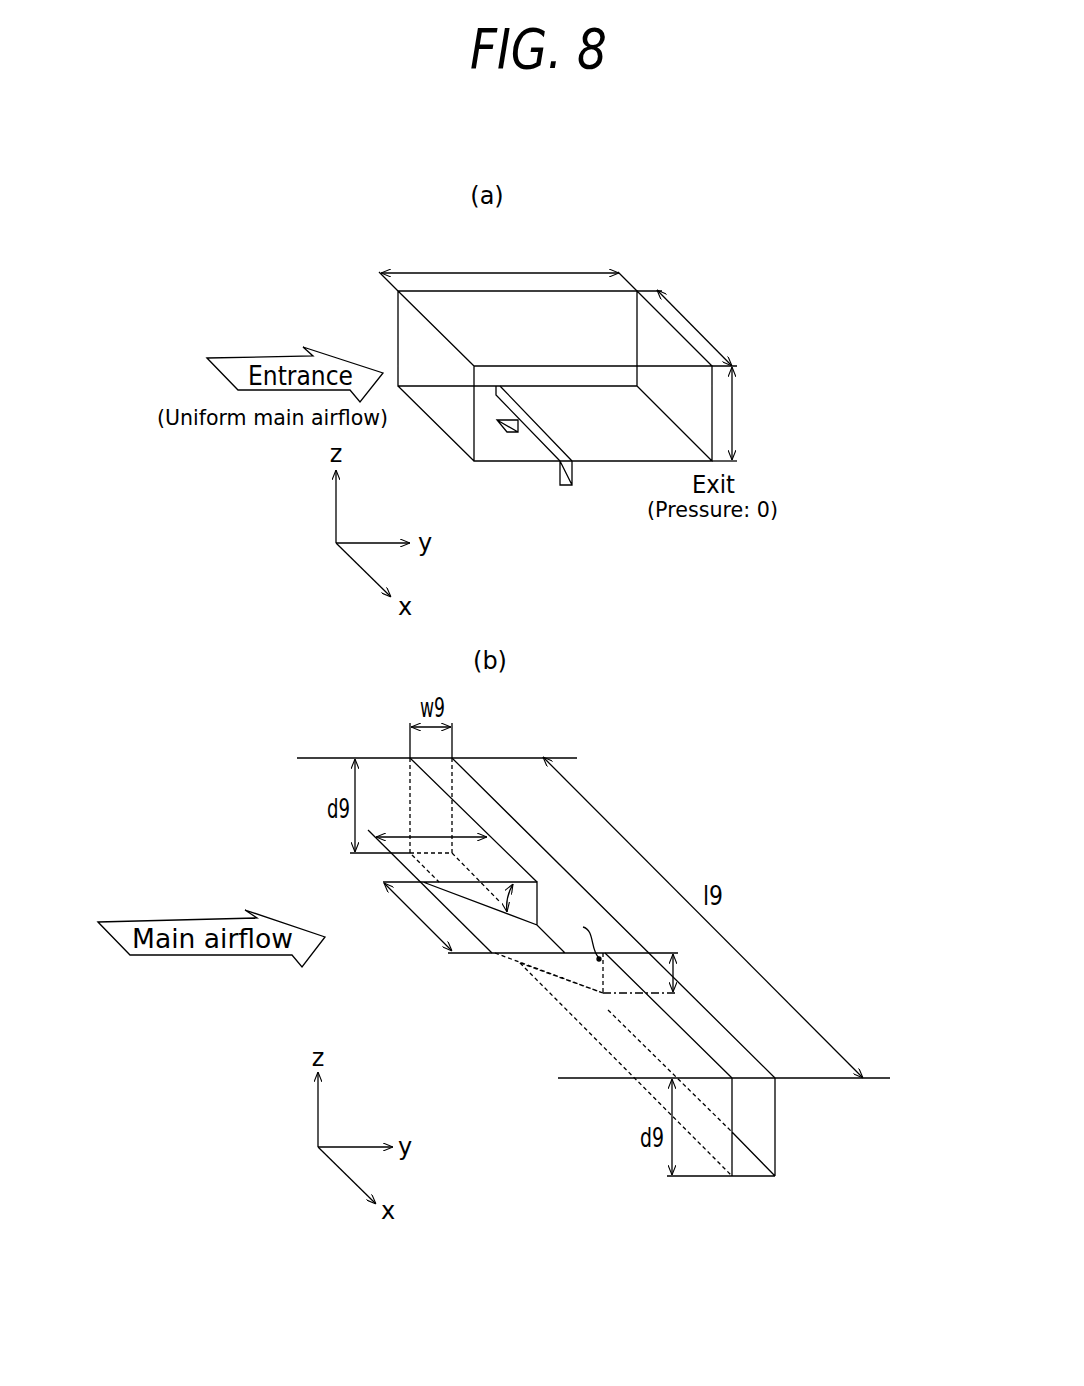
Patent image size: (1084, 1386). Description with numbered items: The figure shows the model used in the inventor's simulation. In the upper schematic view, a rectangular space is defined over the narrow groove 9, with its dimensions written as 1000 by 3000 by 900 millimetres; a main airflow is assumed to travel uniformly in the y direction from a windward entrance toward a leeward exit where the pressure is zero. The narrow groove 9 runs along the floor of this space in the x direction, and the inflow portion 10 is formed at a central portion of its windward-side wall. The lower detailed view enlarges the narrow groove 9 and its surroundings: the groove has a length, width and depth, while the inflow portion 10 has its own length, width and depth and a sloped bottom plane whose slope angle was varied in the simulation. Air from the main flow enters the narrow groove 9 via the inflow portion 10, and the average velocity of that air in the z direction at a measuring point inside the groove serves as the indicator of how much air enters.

The narrow groove 9 is at (560, 449).
The inflow portion 10 is at (519, 421).
The duct length dimension 3000 is at (508, 264).
The duct width dimension 1000 is at (696, 328).
The duct height dimension 900 is at (744, 414).